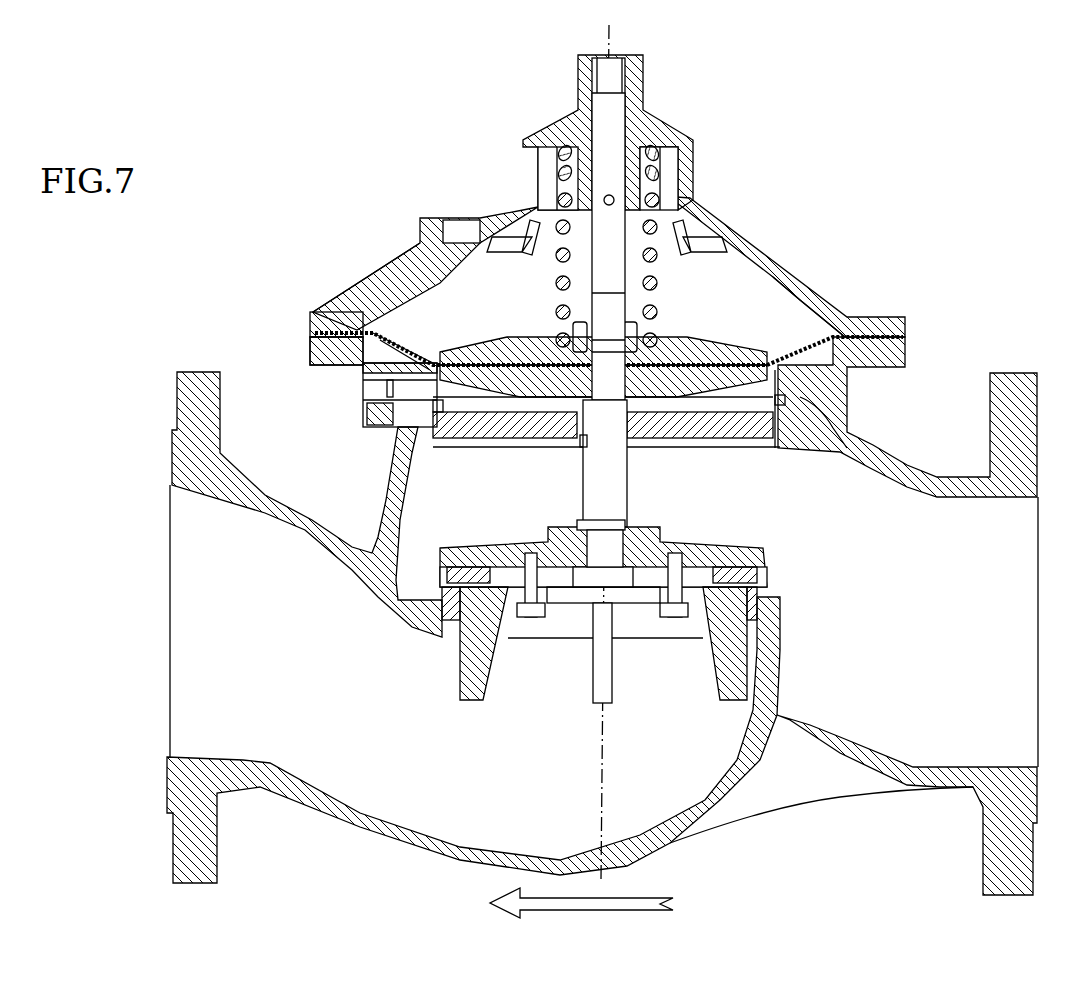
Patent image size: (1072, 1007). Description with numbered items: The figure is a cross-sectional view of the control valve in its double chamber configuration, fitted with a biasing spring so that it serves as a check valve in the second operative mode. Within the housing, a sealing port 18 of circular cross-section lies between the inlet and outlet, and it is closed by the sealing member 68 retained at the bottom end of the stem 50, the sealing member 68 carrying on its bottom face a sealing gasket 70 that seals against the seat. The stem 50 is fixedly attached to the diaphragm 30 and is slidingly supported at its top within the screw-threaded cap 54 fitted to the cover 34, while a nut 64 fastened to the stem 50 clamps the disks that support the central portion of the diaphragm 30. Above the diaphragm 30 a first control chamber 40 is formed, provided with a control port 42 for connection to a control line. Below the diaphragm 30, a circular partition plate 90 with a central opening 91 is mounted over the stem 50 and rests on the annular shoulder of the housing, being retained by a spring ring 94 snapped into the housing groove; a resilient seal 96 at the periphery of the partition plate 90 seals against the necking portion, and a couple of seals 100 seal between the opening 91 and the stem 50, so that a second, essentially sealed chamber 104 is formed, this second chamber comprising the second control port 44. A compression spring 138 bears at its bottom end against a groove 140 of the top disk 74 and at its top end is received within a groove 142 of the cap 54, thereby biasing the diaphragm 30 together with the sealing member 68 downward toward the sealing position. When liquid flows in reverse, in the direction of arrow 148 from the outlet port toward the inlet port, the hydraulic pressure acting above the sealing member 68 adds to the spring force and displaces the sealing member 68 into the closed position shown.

The sealing port 18 is at (565, 632).
The diaphragm 30 is at (807, 343).
The cover 34 is at (599, 243).
The first control chamber 40 is at (710, 287).
The control port 42 is at (462, 215).
The second control port 44 is at (372, 414).
The stem 50 is at (607, 292).
The screw-threaded cap 54 is at (648, 132).
The nut 64 is at (630, 335).
The sealing member 68 is at (695, 557).
The sealing gasket 70 is at (367, 383).
The top disk 74 is at (538, 337).
The partition plate 90 is at (693, 428).
The central opening 91 is at (583, 450).
The spring ring 94 is at (818, 440).
The resilient seal 96 is at (783, 410).
The seals 100 is at (535, 440).
The second chamber 104 is at (430, 300).
The compression spring 138 is at (690, 193).
The groove 140 is at (803, 300).
The groove 142 is at (665, 153).
The arrow 148 is at (645, 897).